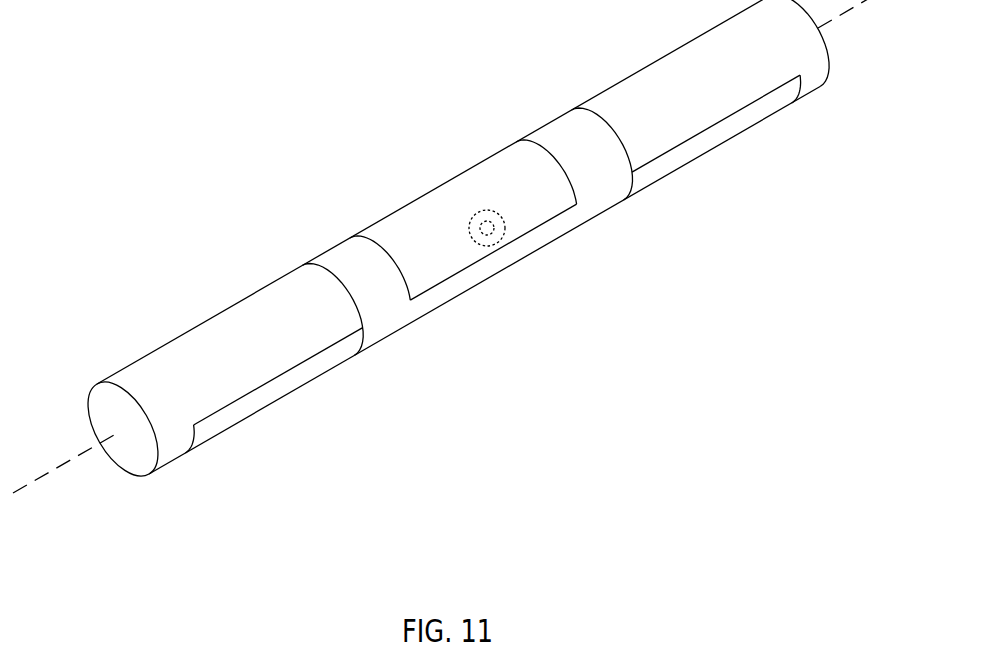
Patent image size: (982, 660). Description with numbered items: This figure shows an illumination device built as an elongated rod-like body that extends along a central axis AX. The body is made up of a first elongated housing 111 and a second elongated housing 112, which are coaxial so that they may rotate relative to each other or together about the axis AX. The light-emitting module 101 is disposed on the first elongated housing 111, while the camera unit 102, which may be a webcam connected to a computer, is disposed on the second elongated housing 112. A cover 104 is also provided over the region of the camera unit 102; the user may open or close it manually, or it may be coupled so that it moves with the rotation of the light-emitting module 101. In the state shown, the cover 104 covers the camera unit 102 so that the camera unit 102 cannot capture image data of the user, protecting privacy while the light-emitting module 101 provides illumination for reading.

The light-emitting module 101 is at (290, 382).
The camera unit 102 is at (488, 230).
The cover 104 is at (470, 193).
The first elongated housing 111 is at (223, 333).
The second elongated housing 112 is at (353, 260).
The axis AX is at (47, 473).